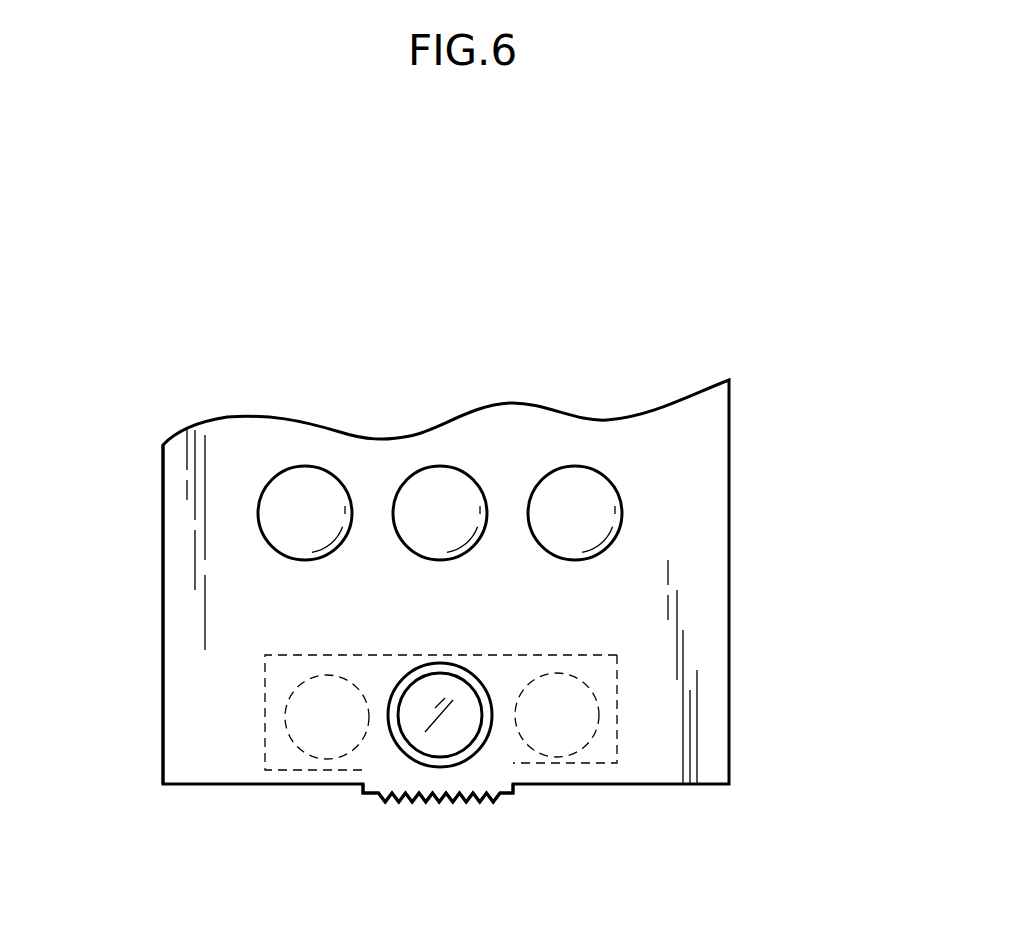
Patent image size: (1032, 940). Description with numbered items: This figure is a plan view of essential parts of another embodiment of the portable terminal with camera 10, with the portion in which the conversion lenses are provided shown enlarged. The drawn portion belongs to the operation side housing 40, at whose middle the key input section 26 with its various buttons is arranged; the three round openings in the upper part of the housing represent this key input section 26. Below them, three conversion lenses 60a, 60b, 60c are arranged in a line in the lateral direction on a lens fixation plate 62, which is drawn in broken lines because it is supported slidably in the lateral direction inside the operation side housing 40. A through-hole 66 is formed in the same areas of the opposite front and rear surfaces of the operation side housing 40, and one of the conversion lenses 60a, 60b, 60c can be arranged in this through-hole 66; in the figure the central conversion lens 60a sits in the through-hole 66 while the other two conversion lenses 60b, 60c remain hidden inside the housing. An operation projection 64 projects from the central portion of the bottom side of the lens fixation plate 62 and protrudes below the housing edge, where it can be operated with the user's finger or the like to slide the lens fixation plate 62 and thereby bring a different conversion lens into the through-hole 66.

The portable terminal with camera 10 is at (505, 375).
The key input section 26 is at (627, 503).
The operation side housing 40 is at (163, 610).
The lens fixation plate 62 is at (617, 748).
The conversion lens 60a is at (440, 762).
The conversion lens 60b is at (598, 712).
The conversion lens 60c is at (270, 772).
The operation projection 64 is at (460, 802).
The through-hole 66 is at (440, 663).